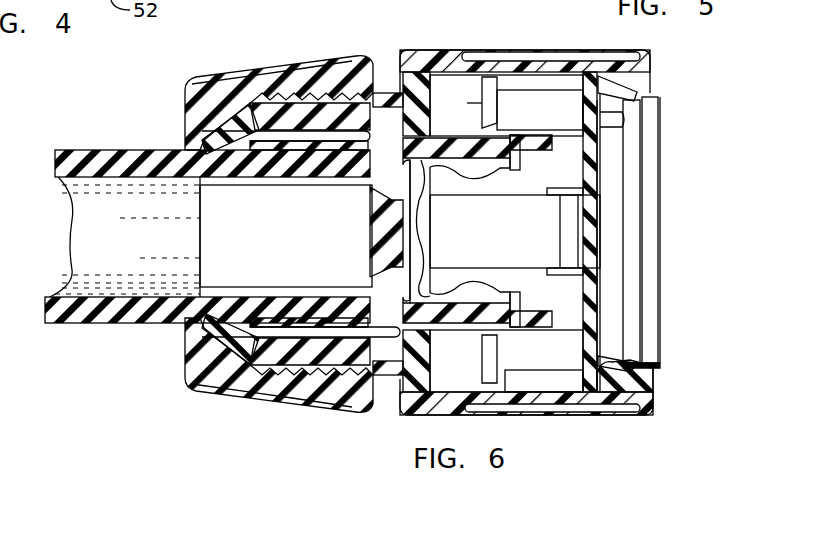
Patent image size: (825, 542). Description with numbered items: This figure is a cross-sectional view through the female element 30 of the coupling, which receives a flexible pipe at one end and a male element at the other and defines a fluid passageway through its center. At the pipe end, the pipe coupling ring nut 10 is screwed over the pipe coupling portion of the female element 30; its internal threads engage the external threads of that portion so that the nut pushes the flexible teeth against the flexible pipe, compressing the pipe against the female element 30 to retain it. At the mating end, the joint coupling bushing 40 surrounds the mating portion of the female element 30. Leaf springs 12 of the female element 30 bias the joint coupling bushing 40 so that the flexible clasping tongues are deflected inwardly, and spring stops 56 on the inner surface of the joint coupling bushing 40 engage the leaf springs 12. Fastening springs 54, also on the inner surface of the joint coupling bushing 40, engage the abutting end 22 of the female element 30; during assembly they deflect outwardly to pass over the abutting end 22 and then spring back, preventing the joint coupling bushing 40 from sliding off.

The pipe coupling ring nut 10 is at (292, 58).
The leaf springs 12 is at (467, 103).
The spring stops 56 is at (540, 85).
The female element 30 is at (672, 152).
The abutting end 22 is at (660, 362).
The fastening springs 54 is at (622, 367).
The joint coupling bushing 40 is at (546, 417).